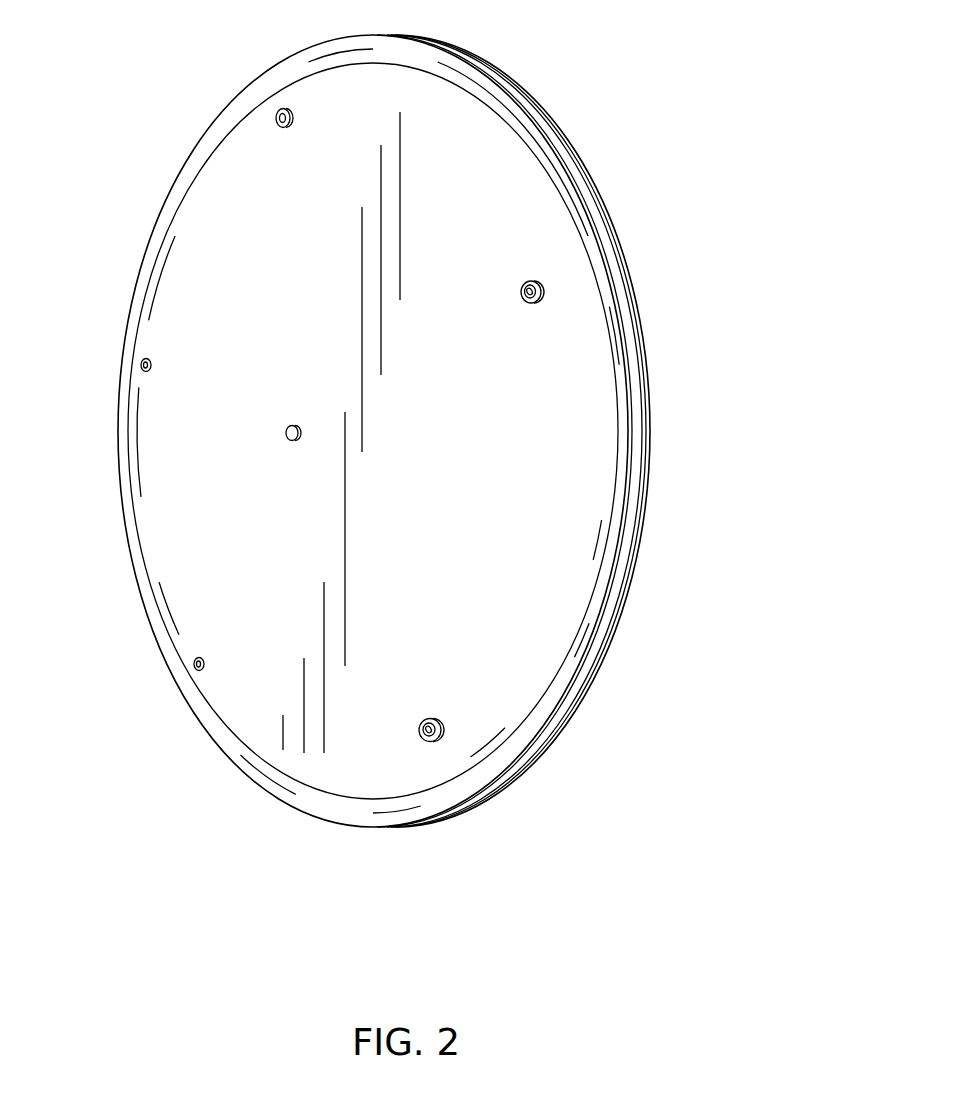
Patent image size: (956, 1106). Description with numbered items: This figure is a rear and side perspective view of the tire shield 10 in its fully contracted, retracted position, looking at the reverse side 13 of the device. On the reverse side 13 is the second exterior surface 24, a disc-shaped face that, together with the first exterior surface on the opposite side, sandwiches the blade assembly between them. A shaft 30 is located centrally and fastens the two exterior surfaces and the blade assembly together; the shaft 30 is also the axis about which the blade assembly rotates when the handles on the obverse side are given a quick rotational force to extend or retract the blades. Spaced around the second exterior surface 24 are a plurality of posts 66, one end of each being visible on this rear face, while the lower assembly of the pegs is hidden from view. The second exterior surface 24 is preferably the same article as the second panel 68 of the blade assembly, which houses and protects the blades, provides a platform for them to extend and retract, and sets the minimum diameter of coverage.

The tire shield 10 is at (638, 51).
The reverse side 13 is at (528, 178).
The second exterior surface 24 is at (582, 450).
The shaft 30 is at (287, 433).
The posts 66 is at (276, 119).
The second panel 68 is at (597, 498).